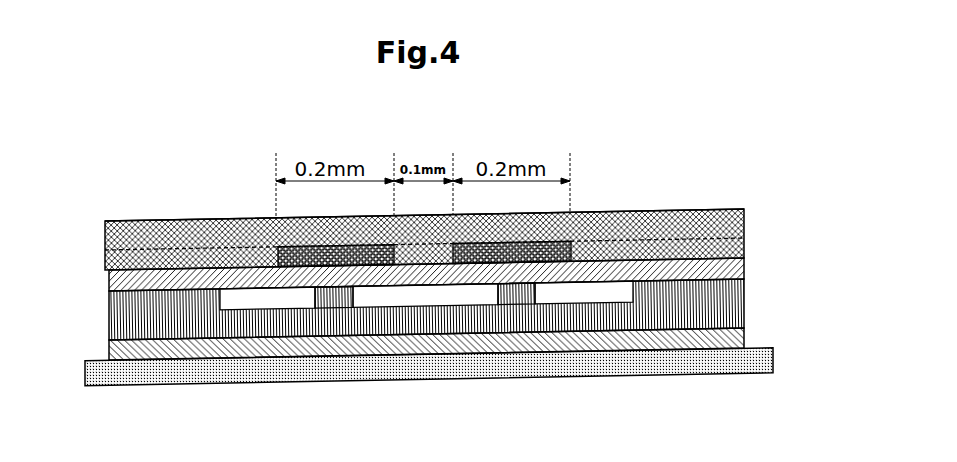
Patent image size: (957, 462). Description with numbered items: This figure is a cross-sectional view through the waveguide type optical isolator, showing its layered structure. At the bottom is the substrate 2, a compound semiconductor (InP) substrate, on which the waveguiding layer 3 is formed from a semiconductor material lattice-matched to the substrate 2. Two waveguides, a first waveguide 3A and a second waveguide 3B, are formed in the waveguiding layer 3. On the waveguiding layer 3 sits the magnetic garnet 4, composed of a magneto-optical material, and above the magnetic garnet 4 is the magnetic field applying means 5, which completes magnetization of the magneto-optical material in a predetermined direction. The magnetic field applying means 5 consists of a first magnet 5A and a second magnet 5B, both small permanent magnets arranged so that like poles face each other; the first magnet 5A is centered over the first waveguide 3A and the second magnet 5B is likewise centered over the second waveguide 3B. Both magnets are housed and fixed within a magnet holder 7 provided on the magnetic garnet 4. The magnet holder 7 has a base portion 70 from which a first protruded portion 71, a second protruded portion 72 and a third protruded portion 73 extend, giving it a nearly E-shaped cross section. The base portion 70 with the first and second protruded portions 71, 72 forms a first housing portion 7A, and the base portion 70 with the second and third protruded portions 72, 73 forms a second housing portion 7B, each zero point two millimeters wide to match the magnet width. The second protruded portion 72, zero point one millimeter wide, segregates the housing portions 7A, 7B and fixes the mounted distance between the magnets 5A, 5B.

The substrate 2 is at (718, 333).
The waveguiding layer 3 is at (461, 348).
The first waveguide 3A is at (328, 315).
The second waveguide 3B is at (510, 313).
The magnetic garnet 4 is at (737, 258).
The magnetic field applying means 5 is at (424, 346).
The first magnet 5A is at (362, 257).
The second magnet 5B is at (485, 254).
The magnet holder 7 is at (459, 187).
The first housing portion 7A is at (267, 210).
The second housing portion 7B is at (565, 203).
The base portion 70 is at (703, 200).
The first protruded portion 71 is at (165, 252).
The second protruded portion 72 is at (412, 250).
The third protruded portion 73 is at (688, 220).